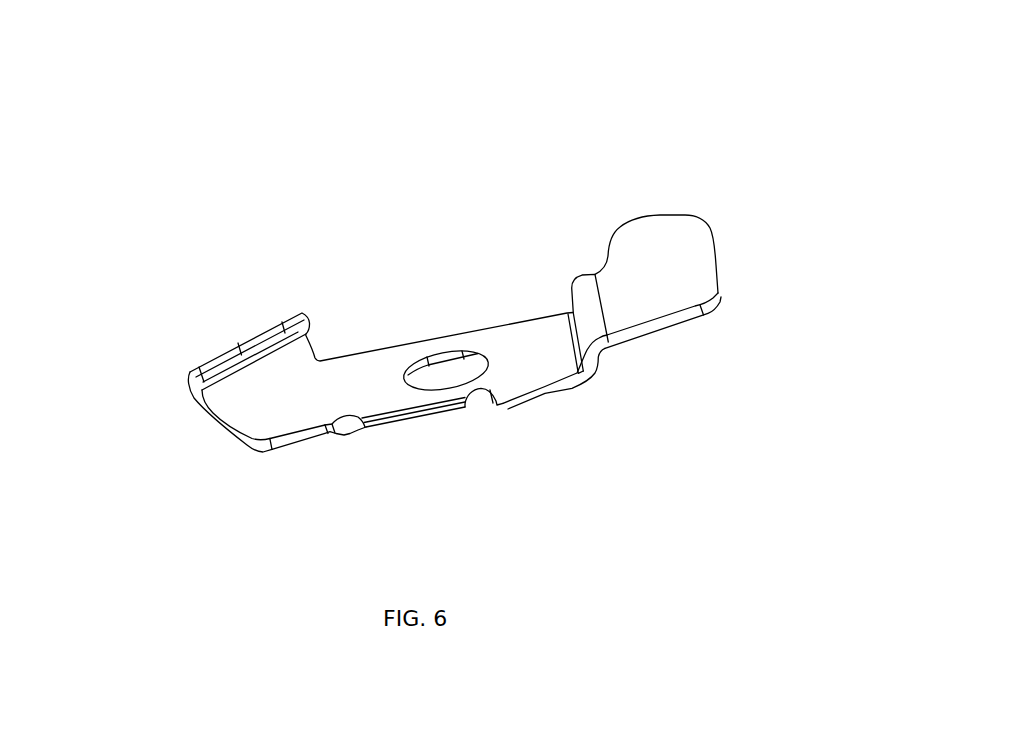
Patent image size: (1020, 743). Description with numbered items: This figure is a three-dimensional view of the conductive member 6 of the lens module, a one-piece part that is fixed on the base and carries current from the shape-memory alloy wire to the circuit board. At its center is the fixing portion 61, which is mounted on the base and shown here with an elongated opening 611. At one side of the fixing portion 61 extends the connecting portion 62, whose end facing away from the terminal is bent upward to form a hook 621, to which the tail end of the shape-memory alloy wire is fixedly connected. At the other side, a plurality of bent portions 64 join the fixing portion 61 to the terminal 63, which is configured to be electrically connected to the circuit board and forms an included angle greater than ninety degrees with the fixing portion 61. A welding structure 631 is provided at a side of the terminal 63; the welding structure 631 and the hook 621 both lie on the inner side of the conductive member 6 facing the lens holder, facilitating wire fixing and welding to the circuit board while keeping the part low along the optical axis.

The conductive member 6 is at (498, 139).
The fixing portion 61 is at (358, 430).
The through hole 611 is at (495, 347).
The connecting portion 62 is at (195, 417).
The hook 621 is at (262, 363).
The terminal 63 is at (716, 297).
The welding structure 631 is at (643, 236).
The bent portions 64 is at (587, 300).